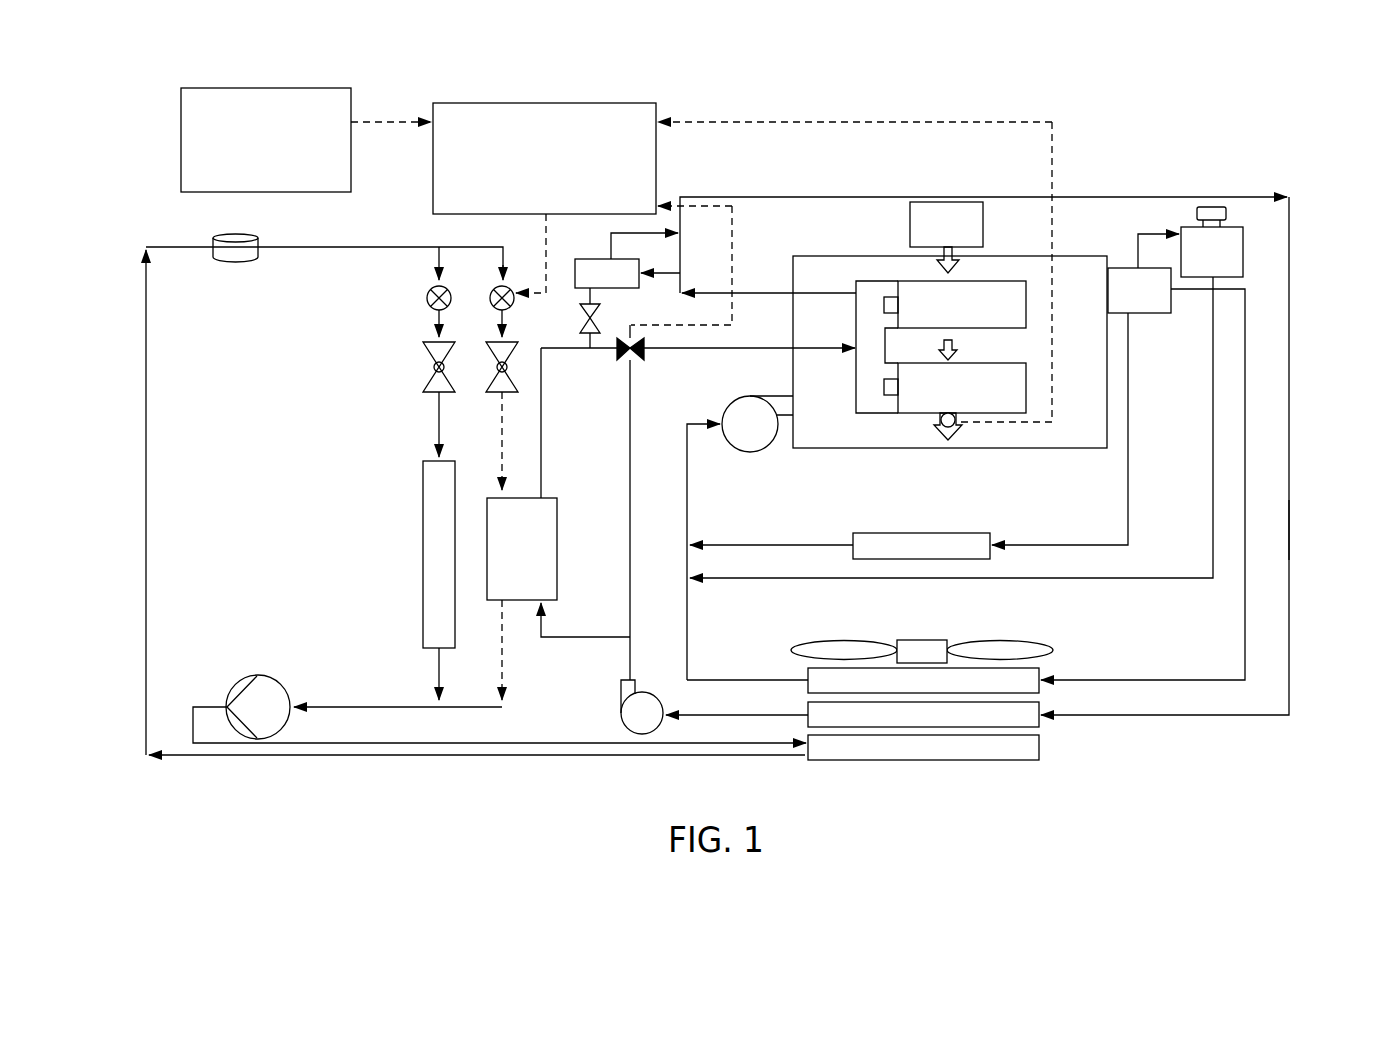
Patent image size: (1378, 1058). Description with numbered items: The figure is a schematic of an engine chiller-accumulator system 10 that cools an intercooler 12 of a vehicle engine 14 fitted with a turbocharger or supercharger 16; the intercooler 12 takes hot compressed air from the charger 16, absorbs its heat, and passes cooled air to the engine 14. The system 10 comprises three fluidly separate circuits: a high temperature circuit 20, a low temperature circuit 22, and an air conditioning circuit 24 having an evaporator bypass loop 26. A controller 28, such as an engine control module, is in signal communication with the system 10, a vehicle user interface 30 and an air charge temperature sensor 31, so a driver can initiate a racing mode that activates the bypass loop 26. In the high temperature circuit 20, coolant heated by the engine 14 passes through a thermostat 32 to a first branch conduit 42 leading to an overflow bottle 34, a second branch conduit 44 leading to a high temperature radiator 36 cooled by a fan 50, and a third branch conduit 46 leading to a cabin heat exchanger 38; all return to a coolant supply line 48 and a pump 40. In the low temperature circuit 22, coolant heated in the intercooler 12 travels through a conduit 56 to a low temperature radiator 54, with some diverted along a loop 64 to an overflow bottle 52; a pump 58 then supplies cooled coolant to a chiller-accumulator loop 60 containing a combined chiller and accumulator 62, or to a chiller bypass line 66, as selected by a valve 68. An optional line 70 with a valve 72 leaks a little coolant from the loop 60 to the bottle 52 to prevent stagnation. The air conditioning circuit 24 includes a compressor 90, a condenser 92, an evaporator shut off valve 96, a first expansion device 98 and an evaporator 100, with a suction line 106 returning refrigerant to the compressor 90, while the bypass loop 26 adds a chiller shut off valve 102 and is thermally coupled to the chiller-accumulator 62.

The engine chiller-accumulator system 10 is at (1190, 98).
The intercooler 12 is at (1032, 281).
The vehicle engine 14 is at (1058, 448).
The turbocharger or supercharger 16 is at (950, 202).
The high temperature circuit 20 is at (1250, 600).
The low temperature circuit 22 is at (1292, 538).
The air conditioning circuit 24 is at (137, 595).
The evaporator bypass loop 26 is at (508, 251).
The controller 28 is at (548, 103).
The vehicle user interface 30 is at (268, 88).
The air charge temperature sensor 31 is at (958, 425).
The thermostat 32 is at (1150, 313).
The overflow bottle 34 is at (1244, 256).
The high temperature radiator 36 is at (1040, 670).
The cabin heat exchanger 38 is at (928, 533).
The pump 40 is at (748, 452).
The first branch conduit 42 is at (1152, 233).
The second branch conduit 44 is at (1248, 432).
The third branch conduit 46 is at (1130, 460).
The coolant supply line 48 is at (685, 478).
The fan 50 is at (1015, 644).
The overflow bottle 52 is at (606, 260).
The low temperature radiator 54 is at (1040, 728).
The conduit 56 is at (1112, 195).
The pump 58 is at (662, 703).
The chiller-accumulator loop 60 is at (590, 637).
The chiller-accumulator 62 is at (557, 552).
The loop 64 is at (660, 278).
The chiller bypass line 66 is at (686, 578).
The valve 68 is at (617, 352).
The line 70 is at (598, 295).
The valve 72 is at (601, 318).
The compressor 90 is at (272, 683).
The condenser 92 is at (990, 762).
The evaporator shut off valve 96 is at (428, 305).
The first expansion device 98 is at (434, 367).
The evaporator 100 is at (423, 556).
The chiller shut off valve 102 is at (514, 304).
The suction line 106 is at (337, 707).